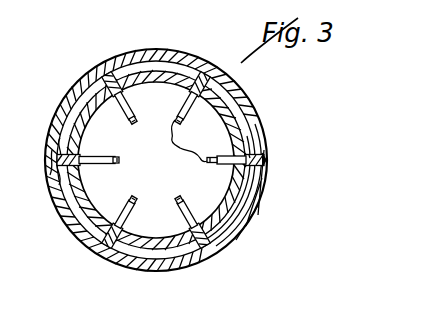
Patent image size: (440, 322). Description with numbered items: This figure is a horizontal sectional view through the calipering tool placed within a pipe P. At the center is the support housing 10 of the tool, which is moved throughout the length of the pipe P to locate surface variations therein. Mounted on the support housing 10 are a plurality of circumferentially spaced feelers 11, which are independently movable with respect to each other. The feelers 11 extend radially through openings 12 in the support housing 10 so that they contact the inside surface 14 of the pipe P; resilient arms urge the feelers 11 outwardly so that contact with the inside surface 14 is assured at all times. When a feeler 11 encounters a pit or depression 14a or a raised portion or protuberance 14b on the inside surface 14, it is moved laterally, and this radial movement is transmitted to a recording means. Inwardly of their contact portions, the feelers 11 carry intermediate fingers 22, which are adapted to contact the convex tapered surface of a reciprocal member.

The pipe P is at (197, 52).
The support housing 10 is at (88, 115).
The feelers 11 is at (186, 225).
The openings 12 is at (117, 231).
The inside surface 14 is at (231, 222).
The pits or depressions 14a is at (265, 151).
The raised portions or protuberances 14b is at (52, 164).
The intermediate fingers 22 is at (181, 149).